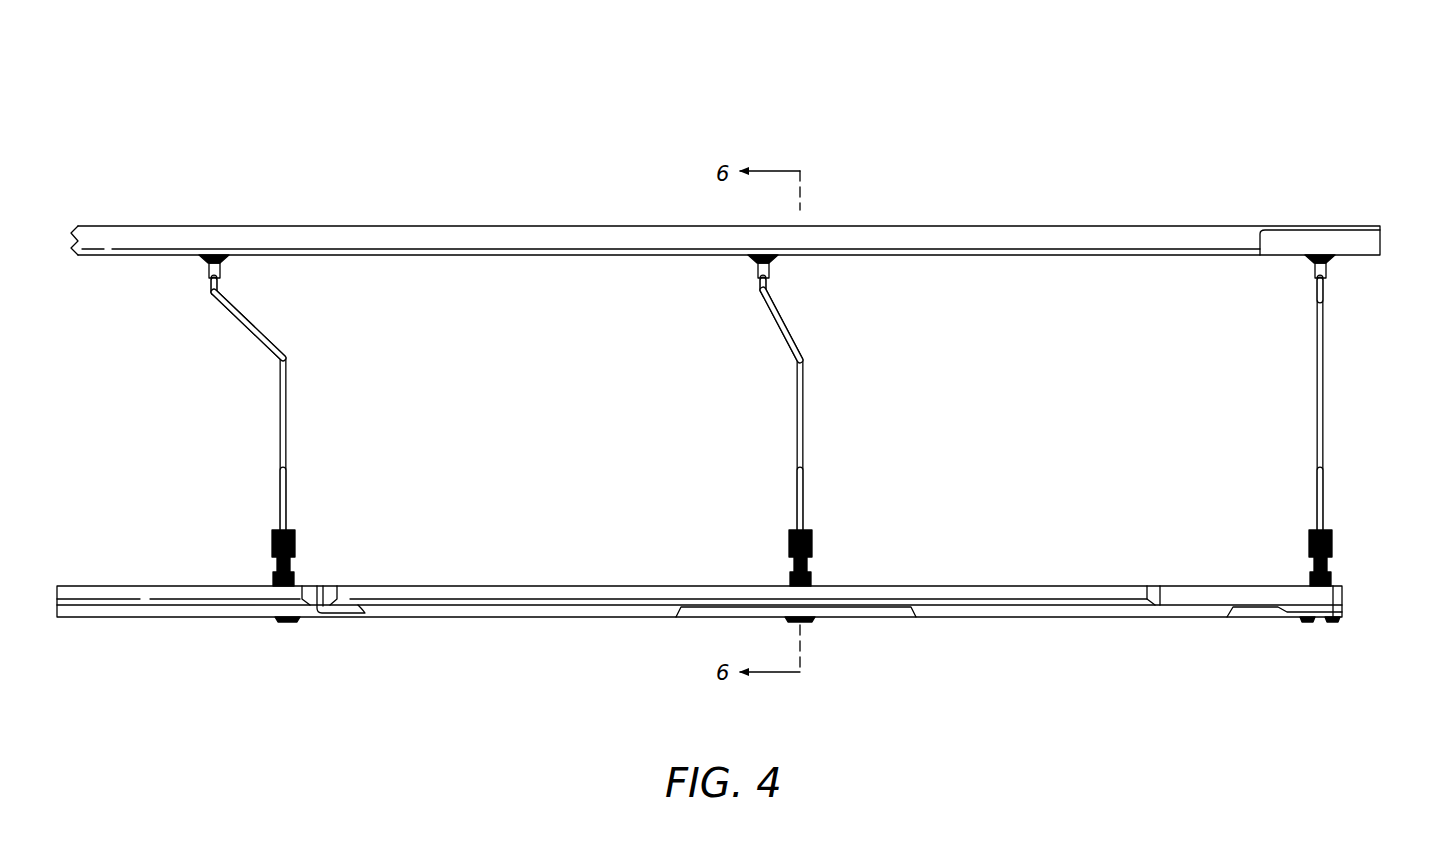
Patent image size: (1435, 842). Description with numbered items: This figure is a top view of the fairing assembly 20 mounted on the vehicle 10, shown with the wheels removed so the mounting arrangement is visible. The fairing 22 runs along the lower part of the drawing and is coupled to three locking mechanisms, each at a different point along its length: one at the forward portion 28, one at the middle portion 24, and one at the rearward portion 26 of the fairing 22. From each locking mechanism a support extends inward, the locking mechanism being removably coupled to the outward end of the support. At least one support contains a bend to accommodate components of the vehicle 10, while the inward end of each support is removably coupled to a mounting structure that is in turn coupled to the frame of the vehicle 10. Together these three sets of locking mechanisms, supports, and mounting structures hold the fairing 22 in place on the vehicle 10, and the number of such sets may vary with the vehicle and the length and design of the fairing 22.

The fairing assembly 20 is at (667, 124).
The vehicle 10 is at (96, 224).
The fairing 22 is at (1117, 628).
The middle portion 24 is at (838, 620).
The rearward portion 26 is at (163, 618).
The forward portion 28 is at (1262, 619).